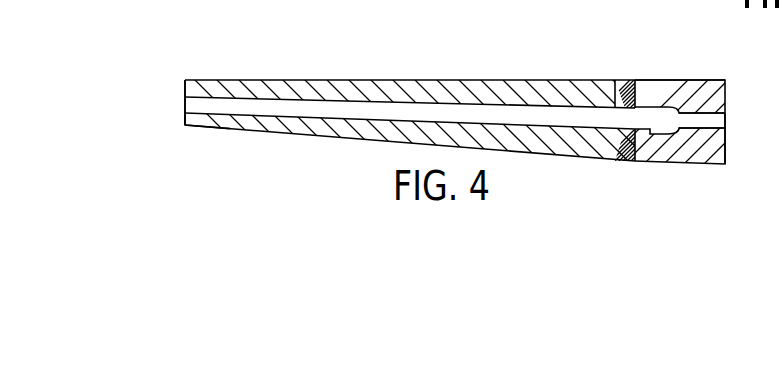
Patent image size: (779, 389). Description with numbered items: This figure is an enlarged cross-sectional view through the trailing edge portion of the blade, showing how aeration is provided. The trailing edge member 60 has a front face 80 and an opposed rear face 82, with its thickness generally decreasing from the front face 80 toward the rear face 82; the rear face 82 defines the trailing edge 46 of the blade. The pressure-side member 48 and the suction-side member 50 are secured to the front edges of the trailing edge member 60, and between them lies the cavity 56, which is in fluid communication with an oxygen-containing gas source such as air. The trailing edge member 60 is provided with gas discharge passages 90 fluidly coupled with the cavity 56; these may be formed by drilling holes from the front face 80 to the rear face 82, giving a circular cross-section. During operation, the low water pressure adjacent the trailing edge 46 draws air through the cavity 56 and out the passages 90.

The trailing edge 46 is at (185, 123).
The pressure-side member 48 is at (693, 165).
The suction-side member 50 is at (690, 80).
The cavity 56 is at (705, 122).
The trailing edge member 60 is at (392, 80).
The front face 80 is at (652, 105).
The rear face 82 is at (186, 80).
The gas discharge passages 90 is at (315, 108).